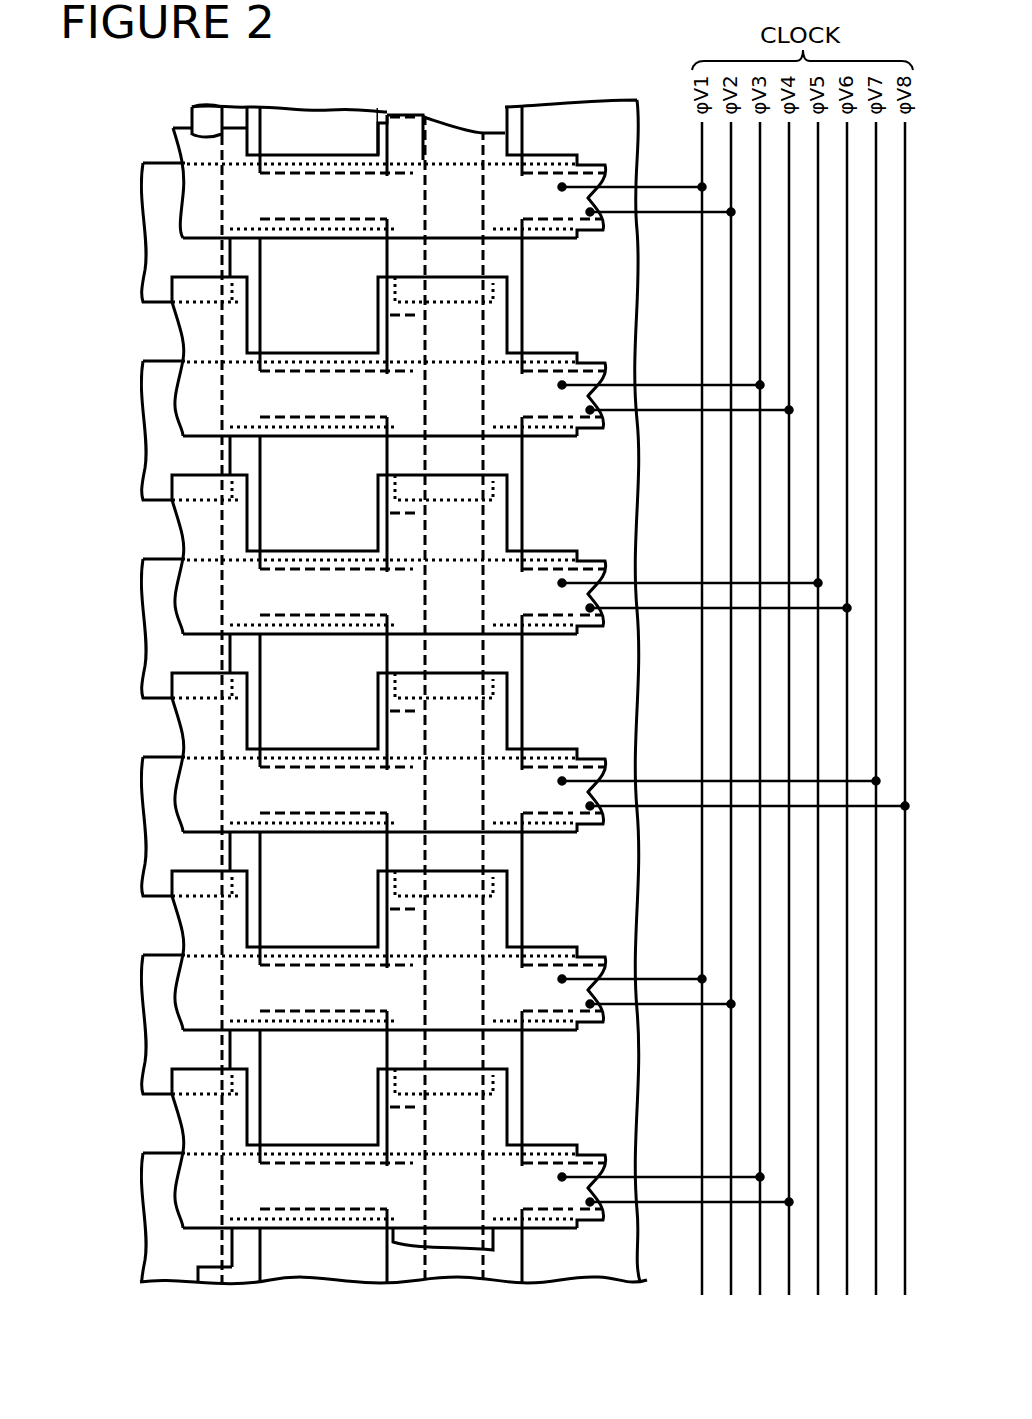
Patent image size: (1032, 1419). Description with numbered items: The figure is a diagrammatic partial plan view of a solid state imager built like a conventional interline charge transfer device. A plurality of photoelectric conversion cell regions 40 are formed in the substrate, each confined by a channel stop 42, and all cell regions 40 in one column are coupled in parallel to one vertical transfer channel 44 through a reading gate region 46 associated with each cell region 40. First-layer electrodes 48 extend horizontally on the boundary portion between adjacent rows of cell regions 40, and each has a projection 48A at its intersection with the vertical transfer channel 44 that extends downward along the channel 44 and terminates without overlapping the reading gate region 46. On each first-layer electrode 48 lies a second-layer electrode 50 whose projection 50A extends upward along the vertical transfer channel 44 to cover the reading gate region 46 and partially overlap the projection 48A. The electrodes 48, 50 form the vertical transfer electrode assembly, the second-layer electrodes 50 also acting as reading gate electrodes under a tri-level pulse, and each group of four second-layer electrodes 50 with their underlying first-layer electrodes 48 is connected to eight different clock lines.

The photoelectric conversion cell region 40 is at (275, 130).
The channel stop 42 is at (250, 107).
The vertical transfer channel 44 is at (465, 1275).
The reading gate region 46 is at (410, 110).
The first-layer electrode 48 is at (160, 1250).
The projection 48A is at (688, 682).
The second-layer electrode 50 is at (190, 1192).
The projection 50A is at (709, 707).